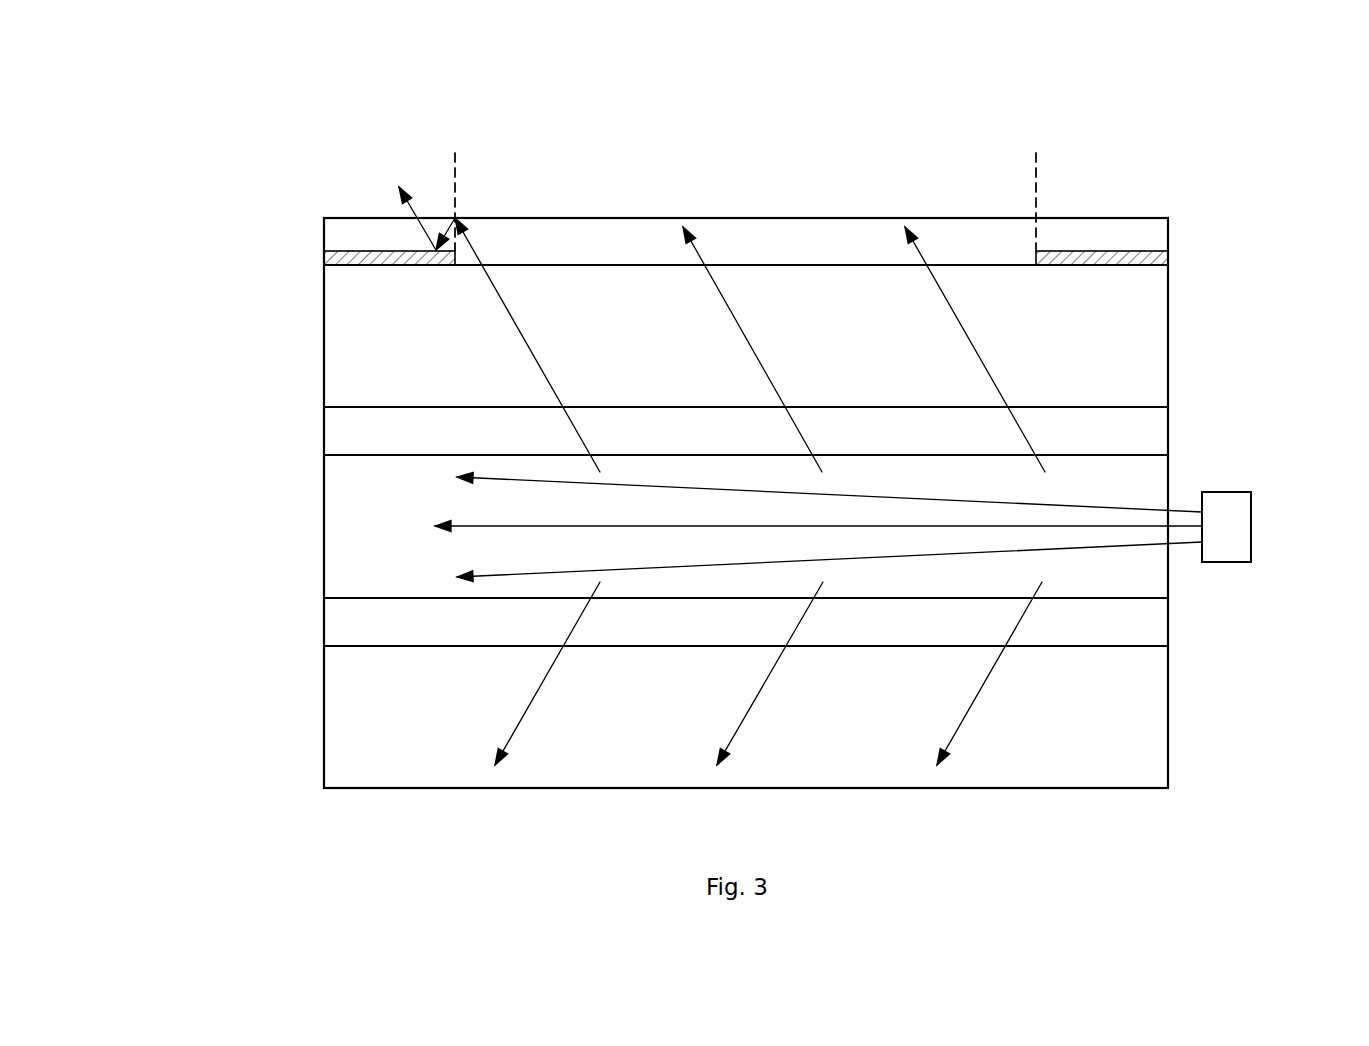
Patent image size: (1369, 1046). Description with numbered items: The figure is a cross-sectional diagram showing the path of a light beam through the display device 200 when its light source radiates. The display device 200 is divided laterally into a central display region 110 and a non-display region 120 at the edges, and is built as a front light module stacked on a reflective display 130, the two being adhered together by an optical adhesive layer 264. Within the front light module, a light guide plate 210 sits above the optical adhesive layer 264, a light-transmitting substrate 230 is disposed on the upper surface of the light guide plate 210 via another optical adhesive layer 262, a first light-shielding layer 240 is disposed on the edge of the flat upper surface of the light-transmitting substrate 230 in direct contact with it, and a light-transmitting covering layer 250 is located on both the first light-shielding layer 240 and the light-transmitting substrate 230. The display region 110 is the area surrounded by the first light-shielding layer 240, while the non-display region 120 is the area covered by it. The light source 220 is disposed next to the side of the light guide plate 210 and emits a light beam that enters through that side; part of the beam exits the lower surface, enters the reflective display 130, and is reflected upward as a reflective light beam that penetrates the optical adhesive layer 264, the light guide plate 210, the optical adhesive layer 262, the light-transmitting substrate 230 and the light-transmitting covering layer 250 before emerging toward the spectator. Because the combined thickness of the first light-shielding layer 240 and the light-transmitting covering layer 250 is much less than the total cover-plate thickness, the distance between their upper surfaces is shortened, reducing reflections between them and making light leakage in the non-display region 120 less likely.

The display device 200 is at (258, 69).
The display region 110 is at (750, 158).
The non-display region 120 is at (362, 158).
The reflective display 130 is at (328, 722).
The light guide plate 210 is at (328, 526).
The light source 220 is at (1238, 525).
The light-transmitting substrate 230 is at (328, 336).
The first light-shielding layer 240 is at (328, 262).
The light-transmitting covering layer 250 is at (328, 237).
The optical adhesive layer 262 is at (328, 436).
The optical adhesive layer 264 is at (328, 626).